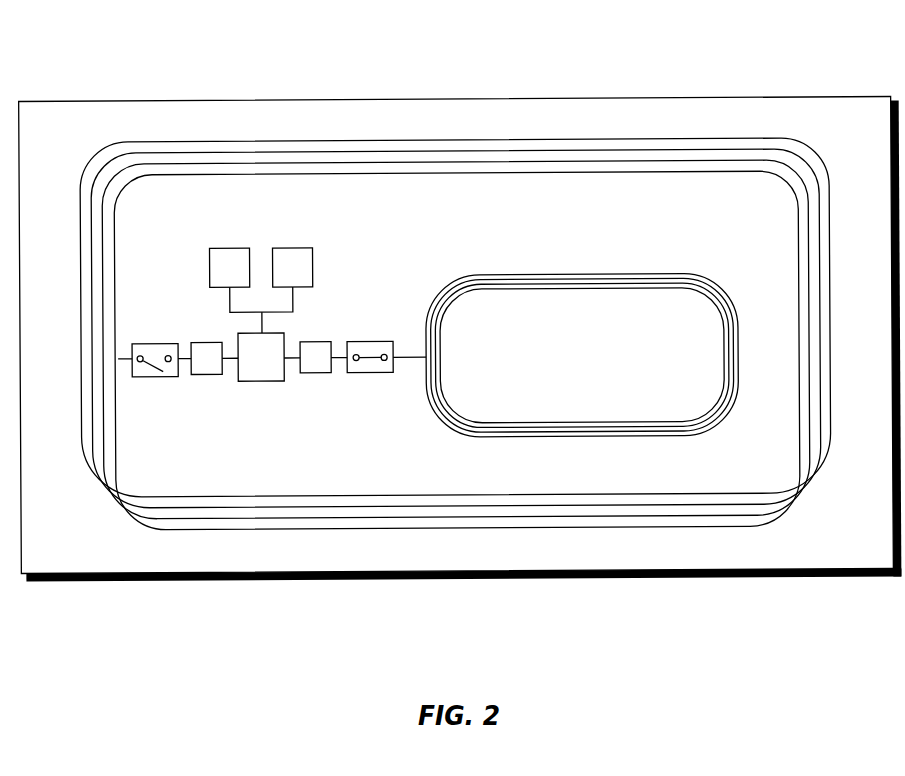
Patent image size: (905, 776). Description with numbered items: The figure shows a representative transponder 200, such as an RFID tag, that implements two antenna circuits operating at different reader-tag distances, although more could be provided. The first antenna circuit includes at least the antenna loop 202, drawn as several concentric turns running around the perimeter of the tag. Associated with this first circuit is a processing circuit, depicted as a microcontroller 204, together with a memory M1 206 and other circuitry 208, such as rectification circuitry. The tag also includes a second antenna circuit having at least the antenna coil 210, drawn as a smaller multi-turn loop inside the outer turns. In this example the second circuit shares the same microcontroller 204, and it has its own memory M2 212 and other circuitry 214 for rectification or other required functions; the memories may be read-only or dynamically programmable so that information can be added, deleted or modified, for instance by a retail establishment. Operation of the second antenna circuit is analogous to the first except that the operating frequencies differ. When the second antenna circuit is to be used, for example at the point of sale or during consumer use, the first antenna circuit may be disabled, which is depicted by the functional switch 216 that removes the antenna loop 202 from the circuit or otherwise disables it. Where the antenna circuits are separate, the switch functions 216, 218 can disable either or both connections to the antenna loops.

The transponder 200 is at (630, 98).
The antenna loop 202 is at (545, 174).
The microcontroller 204 is at (267, 381).
The memory M1 206 is at (230, 247).
The other circuitry 208 is at (210, 341).
The antenna coil 210 is at (600, 275).
The memory M2 212 is at (290, 247).
The other circuitry 214 is at (307, 341).
The functional switch 216 is at (162, 342).
The switch function 218 is at (356, 341).